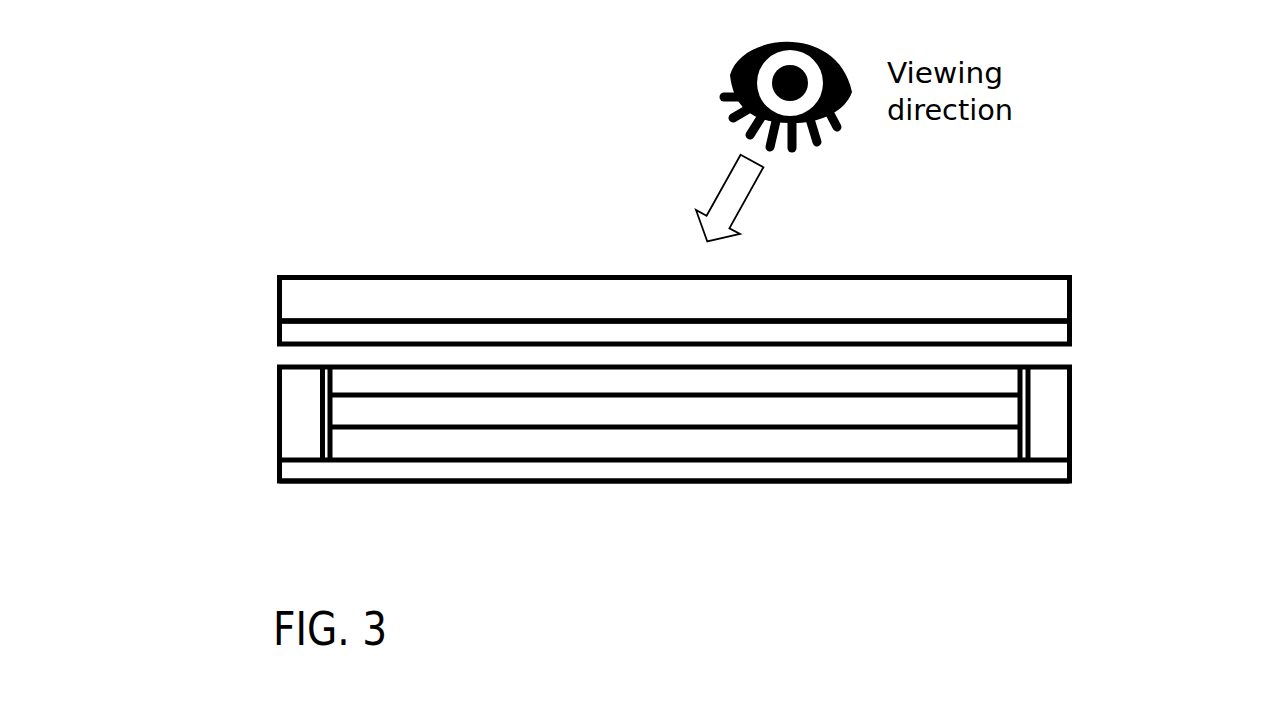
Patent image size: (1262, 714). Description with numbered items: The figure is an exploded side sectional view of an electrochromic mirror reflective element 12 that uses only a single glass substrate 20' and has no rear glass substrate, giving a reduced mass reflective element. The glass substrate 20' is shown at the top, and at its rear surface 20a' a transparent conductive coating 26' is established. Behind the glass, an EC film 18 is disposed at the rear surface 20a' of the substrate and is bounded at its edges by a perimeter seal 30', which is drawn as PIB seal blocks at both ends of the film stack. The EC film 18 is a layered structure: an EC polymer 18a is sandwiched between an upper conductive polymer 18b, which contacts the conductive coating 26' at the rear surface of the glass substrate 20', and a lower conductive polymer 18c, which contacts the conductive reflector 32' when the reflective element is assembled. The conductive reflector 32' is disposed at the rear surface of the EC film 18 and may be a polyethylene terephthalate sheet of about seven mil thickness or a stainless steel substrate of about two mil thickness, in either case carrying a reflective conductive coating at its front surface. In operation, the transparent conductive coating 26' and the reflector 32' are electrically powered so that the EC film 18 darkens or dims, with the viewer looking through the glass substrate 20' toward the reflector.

The mirror reflective element 12 is at (1124, 68).
The glass substrate 20' is at (675, 257).
The rear surface 20a' is at (675, 259).
The transparent conductive coating 26' is at (623, 320).
The perimeter seal 30' is at (620, 413).
The EC film 18 is at (701, 448).
The conductive polymer 18b is at (1007, 378).
The EC polymer 18a is at (968, 418).
The conductive polymer 18c is at (927, 447).
The conductive reflector 32' is at (675, 520).